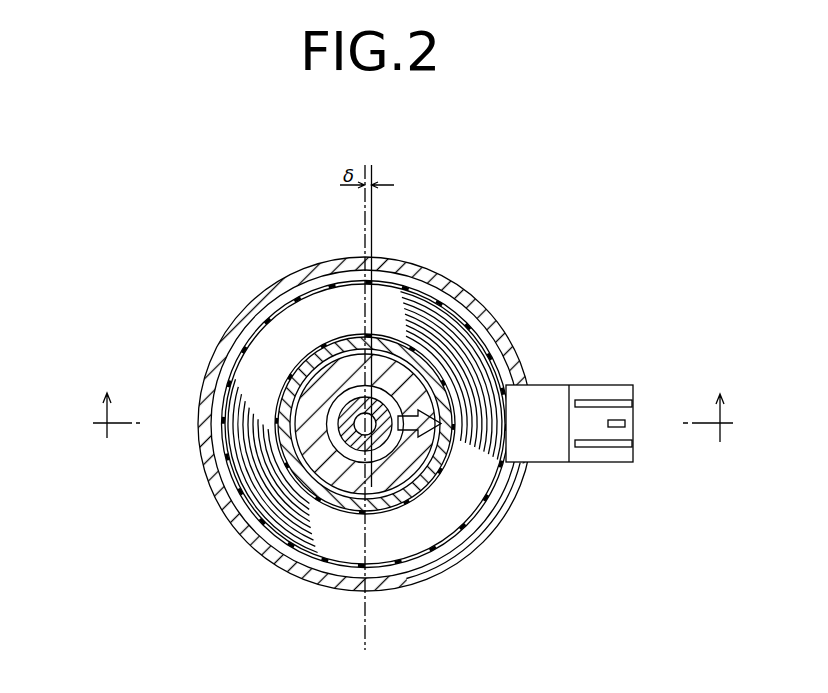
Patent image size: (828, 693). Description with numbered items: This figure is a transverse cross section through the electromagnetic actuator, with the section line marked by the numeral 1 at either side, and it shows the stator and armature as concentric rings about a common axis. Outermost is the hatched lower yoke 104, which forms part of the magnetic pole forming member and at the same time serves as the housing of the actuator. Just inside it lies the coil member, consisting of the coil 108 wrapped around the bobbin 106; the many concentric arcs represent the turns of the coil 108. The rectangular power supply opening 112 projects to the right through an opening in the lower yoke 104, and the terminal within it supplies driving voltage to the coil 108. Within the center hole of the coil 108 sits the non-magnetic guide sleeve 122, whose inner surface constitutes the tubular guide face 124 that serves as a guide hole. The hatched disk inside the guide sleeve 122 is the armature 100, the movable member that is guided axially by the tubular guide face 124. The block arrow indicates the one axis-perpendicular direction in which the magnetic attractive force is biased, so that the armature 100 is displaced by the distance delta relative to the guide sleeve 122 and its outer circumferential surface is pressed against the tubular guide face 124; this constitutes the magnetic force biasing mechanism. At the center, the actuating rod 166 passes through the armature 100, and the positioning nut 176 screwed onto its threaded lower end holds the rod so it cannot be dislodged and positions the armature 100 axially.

The armature 100 is at (410, 450).
The lower yoke 104 is at (212, 460).
The bobbin 106 is at (298, 357).
The coil 108 is at (345, 538).
The power supply opening 112 is at (602, 453).
The guide sleeve 122 is at (447, 383).
The tubular guide face 124 is at (308, 400).
The actuating rod 166 is at (268, 552).
The positioning nut 176 is at (393, 430).
The section line I-I 1 is at (416, 422).